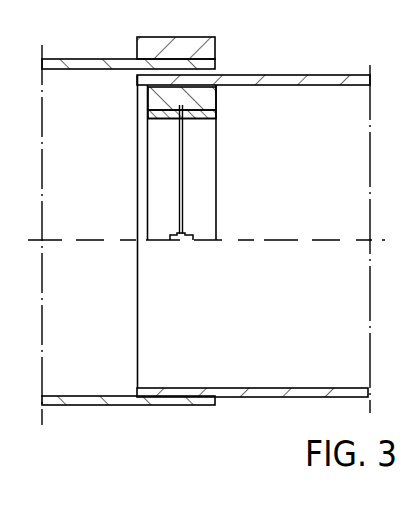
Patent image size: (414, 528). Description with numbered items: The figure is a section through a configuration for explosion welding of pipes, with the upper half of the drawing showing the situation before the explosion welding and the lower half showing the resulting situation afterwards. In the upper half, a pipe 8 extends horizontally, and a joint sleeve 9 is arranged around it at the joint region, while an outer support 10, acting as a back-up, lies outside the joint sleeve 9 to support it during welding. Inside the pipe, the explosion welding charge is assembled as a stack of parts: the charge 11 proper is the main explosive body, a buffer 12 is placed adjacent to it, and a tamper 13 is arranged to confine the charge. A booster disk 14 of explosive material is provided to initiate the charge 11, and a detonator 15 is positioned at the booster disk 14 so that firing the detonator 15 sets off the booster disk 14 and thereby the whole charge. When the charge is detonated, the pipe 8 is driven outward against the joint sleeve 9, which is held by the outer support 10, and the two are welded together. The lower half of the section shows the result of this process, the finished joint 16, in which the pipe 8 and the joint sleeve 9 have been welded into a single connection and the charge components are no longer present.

The pipe 8 is at (300, 76).
The joint sleeve 9 is at (71, 60).
The outer support 10 is at (208, 46).
The charge 11 is at (197, 99).
The buffer 12 is at (218, 86).
The tamper 13 is at (216, 118).
The booster disk 14 is at (183, 188).
The detonator 15 is at (193, 234).
The finished joint 16 is at (185, 394).